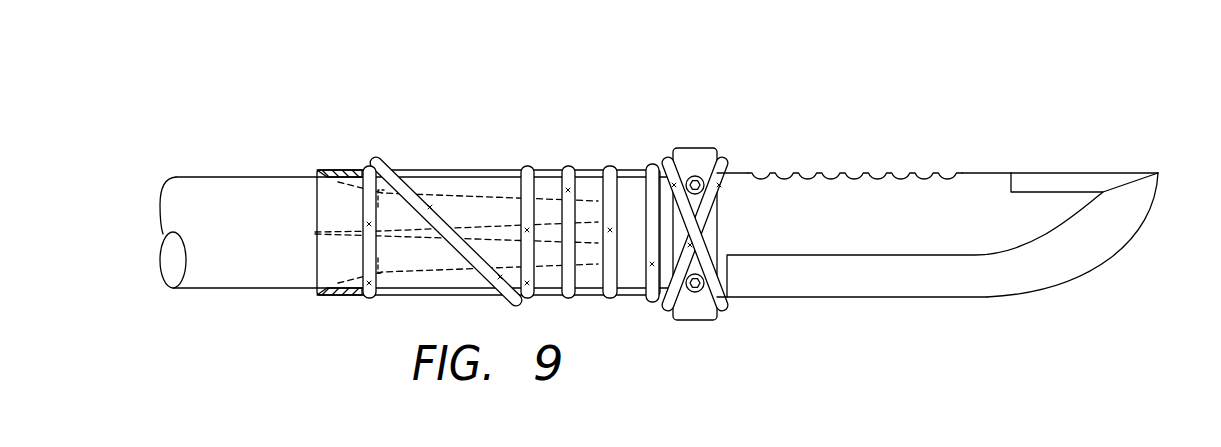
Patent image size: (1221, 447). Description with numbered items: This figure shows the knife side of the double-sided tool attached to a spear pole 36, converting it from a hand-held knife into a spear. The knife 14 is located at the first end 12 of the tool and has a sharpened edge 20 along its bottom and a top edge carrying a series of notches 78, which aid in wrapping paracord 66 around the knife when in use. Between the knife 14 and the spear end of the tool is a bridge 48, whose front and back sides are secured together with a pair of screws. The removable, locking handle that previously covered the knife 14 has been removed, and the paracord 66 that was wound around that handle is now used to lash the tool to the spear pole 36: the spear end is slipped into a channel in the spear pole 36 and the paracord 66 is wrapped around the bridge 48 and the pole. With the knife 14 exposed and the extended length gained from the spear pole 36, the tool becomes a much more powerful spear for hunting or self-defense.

The spear pole 36 is at (233, 190).
The paracord 66 is at (522, 170).
The bridge 48 is at (707, 148).
The series of notches 78 is at (866, 173).
The knife 14 is at (968, 205).
The first end 12 is at (1161, 158).
The sharpened edge 20 is at (981, 284).